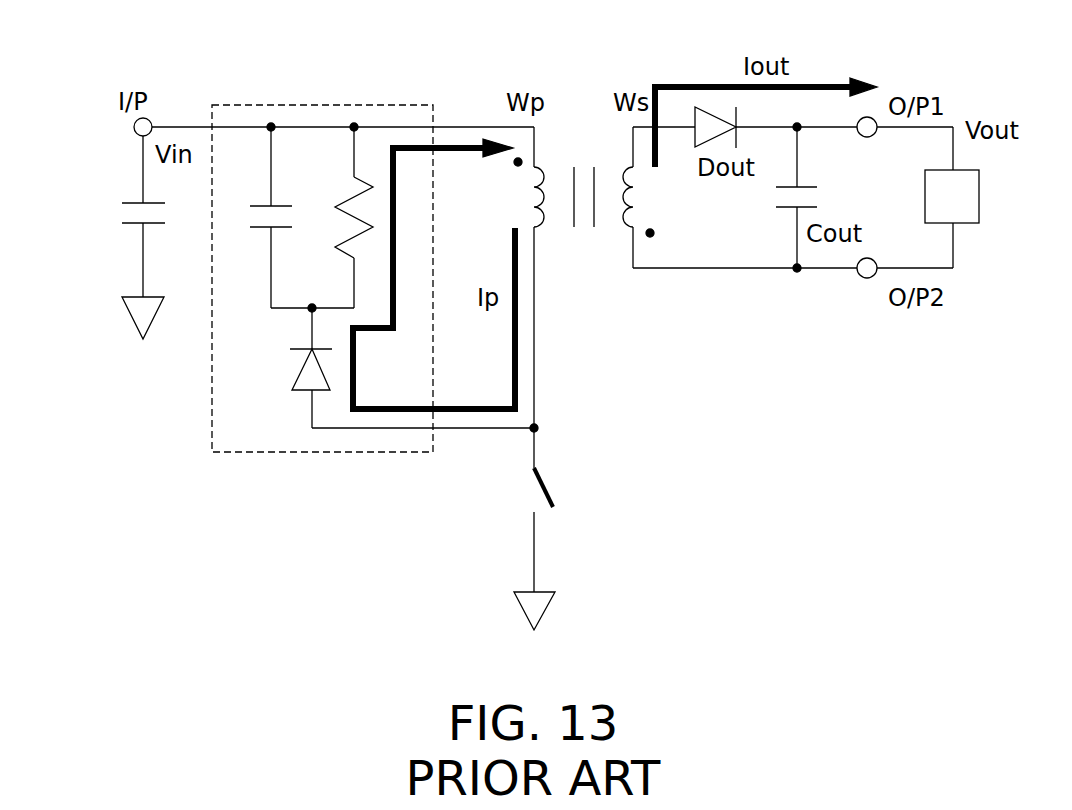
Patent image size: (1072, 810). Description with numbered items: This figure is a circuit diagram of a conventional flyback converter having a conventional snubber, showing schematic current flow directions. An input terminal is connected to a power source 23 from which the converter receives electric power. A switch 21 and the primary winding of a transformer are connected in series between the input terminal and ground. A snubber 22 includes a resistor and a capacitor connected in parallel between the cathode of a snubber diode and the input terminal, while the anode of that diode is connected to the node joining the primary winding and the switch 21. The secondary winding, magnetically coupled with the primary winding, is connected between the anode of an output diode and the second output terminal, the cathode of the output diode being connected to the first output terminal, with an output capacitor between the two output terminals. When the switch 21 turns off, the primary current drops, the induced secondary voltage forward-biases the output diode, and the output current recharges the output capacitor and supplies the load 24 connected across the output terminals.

The switch 21 is at (567, 472).
The snubber 22 is at (373, 105).
The power source 23 is at (126, 200).
The load 24 is at (979, 195).